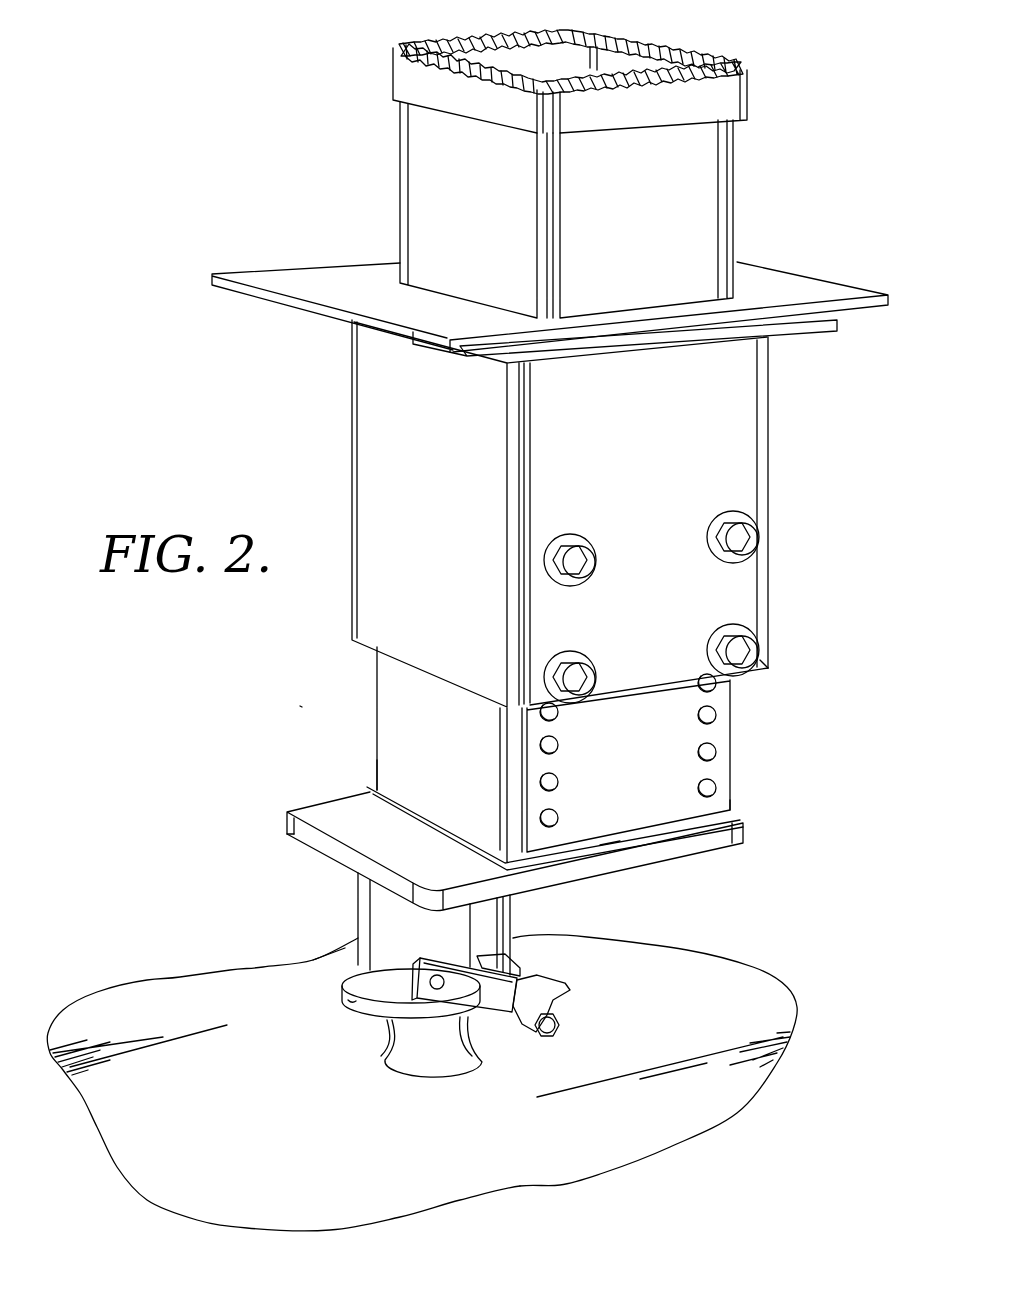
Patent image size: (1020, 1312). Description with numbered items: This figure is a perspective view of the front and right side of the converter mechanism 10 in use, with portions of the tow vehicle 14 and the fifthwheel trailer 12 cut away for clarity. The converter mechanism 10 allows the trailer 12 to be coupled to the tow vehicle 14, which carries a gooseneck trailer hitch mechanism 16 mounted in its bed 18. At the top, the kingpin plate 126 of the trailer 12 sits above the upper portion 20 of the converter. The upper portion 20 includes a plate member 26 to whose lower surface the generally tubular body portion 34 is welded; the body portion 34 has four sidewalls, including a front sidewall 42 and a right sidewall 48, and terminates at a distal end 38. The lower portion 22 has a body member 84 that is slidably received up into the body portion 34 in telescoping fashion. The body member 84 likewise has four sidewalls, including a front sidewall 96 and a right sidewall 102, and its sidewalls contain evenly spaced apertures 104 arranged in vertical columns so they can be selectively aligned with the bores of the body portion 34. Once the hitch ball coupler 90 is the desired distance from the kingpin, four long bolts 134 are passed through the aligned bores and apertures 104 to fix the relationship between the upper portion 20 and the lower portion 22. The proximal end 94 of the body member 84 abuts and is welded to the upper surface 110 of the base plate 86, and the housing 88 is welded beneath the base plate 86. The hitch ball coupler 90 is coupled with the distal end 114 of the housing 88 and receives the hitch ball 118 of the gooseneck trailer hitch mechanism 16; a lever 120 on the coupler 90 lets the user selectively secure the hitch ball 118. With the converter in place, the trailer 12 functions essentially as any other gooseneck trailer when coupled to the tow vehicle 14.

The converter mechanism 10 is at (300, 705).
The fifthwheel trailer 12 is at (722, 158).
The tow vehicle 14 is at (147, 988).
The gooseneck trailer hitch mechanism 16 is at (392, 1067).
The bed 18 is at (763, 977).
The upper portion 20 is at (362, 358).
The lower portion 22 is at (380, 707).
The plate member 26 is at (823, 326).
The body portion 34 is at (748, 487).
The distal end 38 is at (760, 668).
The front sidewall 42 is at (358, 409).
The right sidewall 48 is at (748, 418).
The body member 84 is at (723, 803).
The base plate 86 is at (290, 832).
The housing 88 is at (362, 893).
The hitch ball coupler 90 is at (537, 975).
The proximal end 94 is at (610, 840).
The front sidewall 96 is at (385, 766).
The right sidewall 102 is at (723, 731).
The apertures 104 is at (558, 780).
The upper surface 110 is at (322, 808).
The distal end 114 is at (312, 960).
The hitch ball 118 is at (477, 1040).
The lever 120 is at (453, 958).
The kingpin plate 126 is at (820, 278).
The long bolts 134 is at (586, 560).